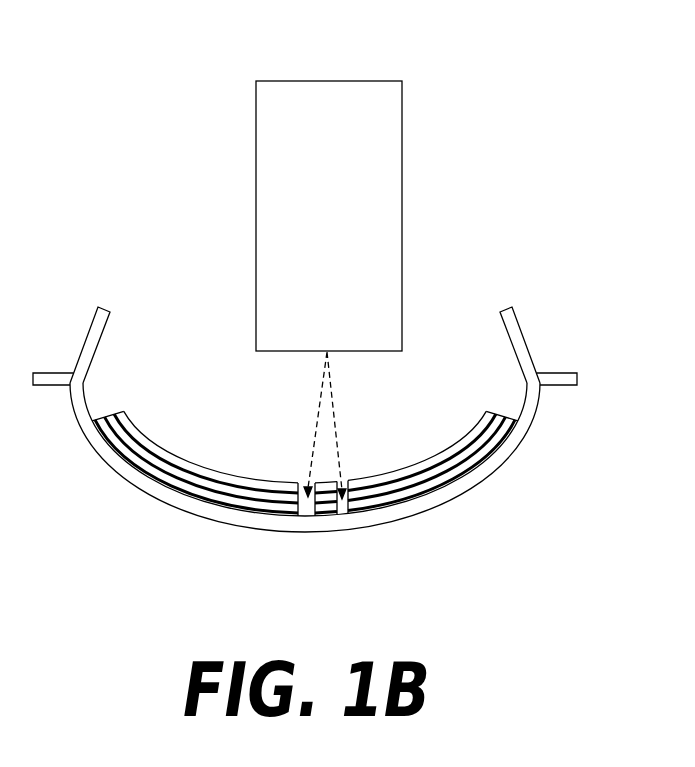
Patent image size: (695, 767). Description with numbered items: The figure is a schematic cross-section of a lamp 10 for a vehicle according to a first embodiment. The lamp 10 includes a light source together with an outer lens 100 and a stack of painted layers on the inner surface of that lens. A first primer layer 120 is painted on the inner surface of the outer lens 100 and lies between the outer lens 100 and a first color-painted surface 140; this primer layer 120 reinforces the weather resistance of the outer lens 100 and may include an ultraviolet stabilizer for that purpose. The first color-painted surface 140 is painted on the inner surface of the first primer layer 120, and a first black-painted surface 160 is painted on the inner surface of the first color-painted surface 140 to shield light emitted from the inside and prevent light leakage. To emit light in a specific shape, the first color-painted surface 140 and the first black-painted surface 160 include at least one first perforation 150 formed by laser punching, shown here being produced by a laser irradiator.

The lamp for a vehicle 10 is at (72, 54).
The outer lens 100 is at (518, 446).
The first primer layer 120 is at (98, 418).
The first color-painted surface 140 is at (508, 419).
The first perforation 150 is at (348, 518).
The first black-painted surface 160 is at (195, 464).